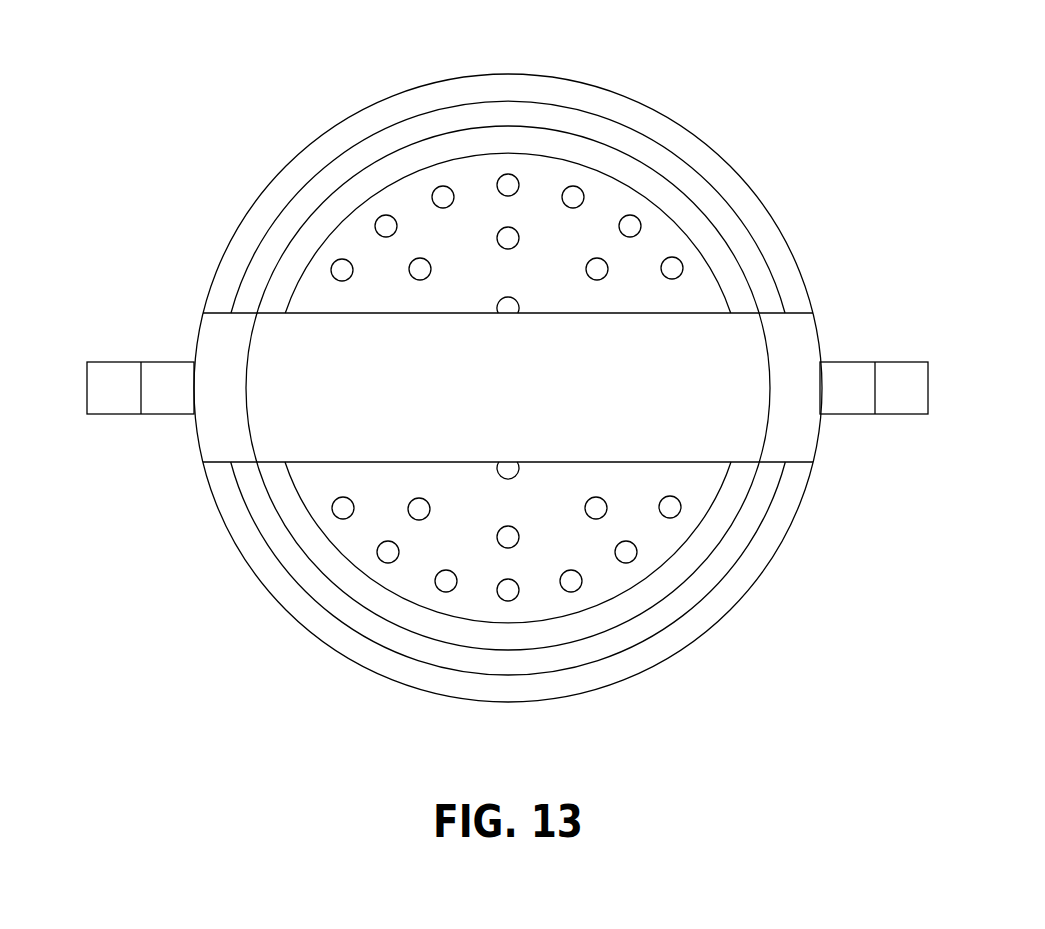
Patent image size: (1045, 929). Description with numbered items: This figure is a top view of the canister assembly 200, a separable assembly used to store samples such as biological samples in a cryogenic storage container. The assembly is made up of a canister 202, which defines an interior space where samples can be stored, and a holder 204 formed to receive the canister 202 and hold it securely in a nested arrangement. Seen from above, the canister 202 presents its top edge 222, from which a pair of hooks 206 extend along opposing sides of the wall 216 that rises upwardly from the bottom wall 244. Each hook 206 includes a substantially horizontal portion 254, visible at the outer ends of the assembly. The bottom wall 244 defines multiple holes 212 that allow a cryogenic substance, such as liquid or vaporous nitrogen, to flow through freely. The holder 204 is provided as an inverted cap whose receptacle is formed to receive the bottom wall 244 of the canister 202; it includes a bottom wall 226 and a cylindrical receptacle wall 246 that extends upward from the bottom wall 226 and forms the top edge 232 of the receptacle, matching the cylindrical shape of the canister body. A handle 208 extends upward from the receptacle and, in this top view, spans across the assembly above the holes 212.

The canister assembly 200 is at (199, 63).
The canister 202 is at (280, 498).
The holder 204 is at (293, 600).
The hooks 206 is at (160, 380).
The handle 208 is at (628, 340).
The holes 212 is at (508, 180).
The wall 216 is at (508, 388).
The top edge 222 is at (508, 388).
The bottom wall 226 is at (283, 552).
The top edge 232 is at (508, 388).
The bottom wall 244 is at (602, 577).
The receptacle wall 246 is at (508, 388).
The horizontal portion 254 is at (507, 388).